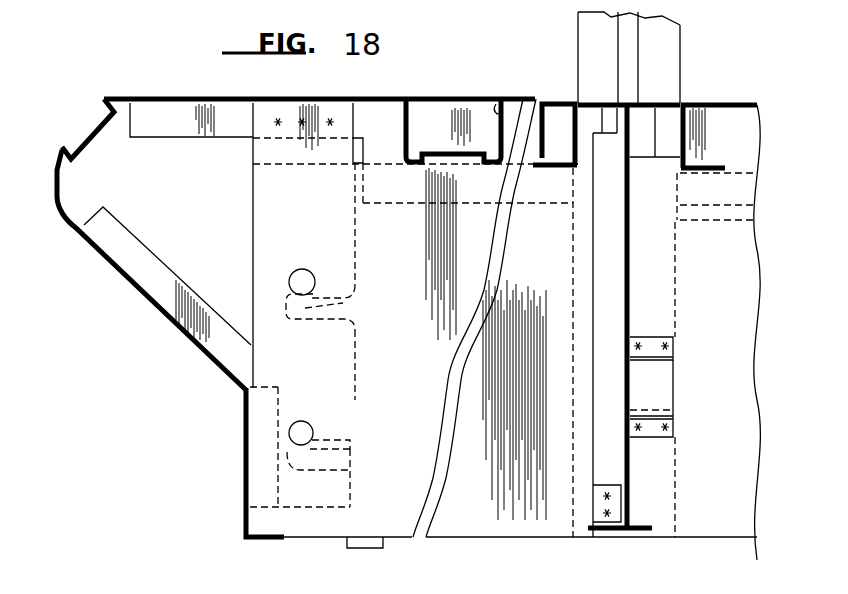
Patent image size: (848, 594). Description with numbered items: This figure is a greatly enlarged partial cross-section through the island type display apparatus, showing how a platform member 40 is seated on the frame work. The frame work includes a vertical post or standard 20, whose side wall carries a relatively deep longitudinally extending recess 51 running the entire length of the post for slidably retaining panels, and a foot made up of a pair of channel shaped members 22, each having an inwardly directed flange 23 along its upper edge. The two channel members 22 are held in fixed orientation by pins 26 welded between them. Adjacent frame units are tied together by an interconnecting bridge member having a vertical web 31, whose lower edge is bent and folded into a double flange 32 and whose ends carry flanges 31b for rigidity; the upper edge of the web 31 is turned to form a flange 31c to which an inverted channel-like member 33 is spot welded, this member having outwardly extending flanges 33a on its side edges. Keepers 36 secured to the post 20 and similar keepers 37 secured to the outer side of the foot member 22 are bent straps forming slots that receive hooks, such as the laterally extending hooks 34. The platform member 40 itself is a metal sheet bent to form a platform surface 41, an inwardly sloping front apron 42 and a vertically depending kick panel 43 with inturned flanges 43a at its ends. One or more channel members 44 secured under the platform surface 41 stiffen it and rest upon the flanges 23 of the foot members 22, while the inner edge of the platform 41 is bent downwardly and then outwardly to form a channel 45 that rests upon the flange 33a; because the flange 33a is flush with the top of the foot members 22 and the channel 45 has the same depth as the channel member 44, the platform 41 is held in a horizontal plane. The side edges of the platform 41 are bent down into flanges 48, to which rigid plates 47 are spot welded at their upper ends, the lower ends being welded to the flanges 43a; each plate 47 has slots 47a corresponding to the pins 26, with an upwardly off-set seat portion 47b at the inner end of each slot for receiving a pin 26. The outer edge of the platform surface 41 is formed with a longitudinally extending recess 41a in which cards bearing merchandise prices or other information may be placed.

The platform member 40 is at (115, 88).
The platform surface 41 is at (235, 97).
The longitudinally extending recess 41a is at (87, 133).
The inwardly sloping front apron 42 is at (166, 307).
The kick panel 43 is at (243, 447).
The inturned flange 43a is at (268, 474).
The downwardly extending flange 48 is at (183, 122).
The inwardly directed flange 23 is at (418, 168).
The channel member 44 is at (496, 106).
The channel 45 is at (573, 135).
The inverted channel-like member 33 is at (652, 103).
The outwardly extending flange 33a is at (546, 168).
The longitudinally extending recess 51 is at (628, 44).
The vertical post 20 is at (683, 63).
The channel shaped member 22 is at (528, 276).
The vertical web 31 is at (630, 296).
The flange 31b is at (593, 232).
The flange 31c is at (609, 136).
The double flange 32 is at (638, 532).
The laterally extending hook 34 is at (665, 366).
The keeper 36 is at (641, 153).
The keeper 37 is at (665, 403).
The pin 26 is at (299, 283).
The rigid plate 47 is at (345, 268).
The slot 47a is at (345, 306).
The upwardly off-set seat portion 47b is at (345, 321).